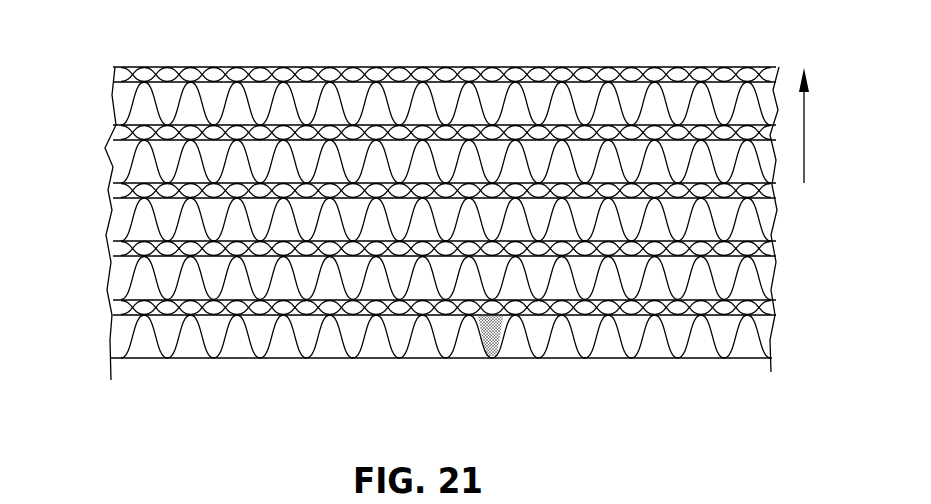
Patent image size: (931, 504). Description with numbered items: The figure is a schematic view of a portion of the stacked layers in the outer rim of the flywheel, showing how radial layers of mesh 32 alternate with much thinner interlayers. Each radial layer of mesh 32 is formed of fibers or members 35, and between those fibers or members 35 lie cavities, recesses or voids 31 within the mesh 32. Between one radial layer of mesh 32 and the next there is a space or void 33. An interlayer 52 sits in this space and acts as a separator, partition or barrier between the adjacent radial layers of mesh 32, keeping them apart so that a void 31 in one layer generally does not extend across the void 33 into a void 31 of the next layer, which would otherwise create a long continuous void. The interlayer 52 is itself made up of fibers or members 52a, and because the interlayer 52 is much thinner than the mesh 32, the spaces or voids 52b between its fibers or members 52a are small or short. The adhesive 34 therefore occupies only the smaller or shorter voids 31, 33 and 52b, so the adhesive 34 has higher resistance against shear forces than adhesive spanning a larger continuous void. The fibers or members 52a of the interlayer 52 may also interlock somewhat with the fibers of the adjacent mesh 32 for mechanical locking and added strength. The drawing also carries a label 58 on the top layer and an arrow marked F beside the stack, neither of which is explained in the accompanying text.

The void 31 is at (130, 281).
The mesh 32 is at (108, 266).
The void 33 is at (127, 125).
The adhesive 34 is at (516, 350).
The fibers or members 35 is at (180, 340).
The interlayer 52 is at (452, 67).
The fibers or members 52a is at (402, 353).
The void 52b is at (323, 315).
The top liner 58 is at (345, 67).
The force direction F is at (806, 113).